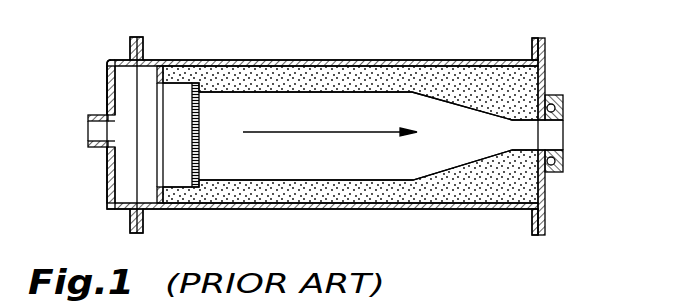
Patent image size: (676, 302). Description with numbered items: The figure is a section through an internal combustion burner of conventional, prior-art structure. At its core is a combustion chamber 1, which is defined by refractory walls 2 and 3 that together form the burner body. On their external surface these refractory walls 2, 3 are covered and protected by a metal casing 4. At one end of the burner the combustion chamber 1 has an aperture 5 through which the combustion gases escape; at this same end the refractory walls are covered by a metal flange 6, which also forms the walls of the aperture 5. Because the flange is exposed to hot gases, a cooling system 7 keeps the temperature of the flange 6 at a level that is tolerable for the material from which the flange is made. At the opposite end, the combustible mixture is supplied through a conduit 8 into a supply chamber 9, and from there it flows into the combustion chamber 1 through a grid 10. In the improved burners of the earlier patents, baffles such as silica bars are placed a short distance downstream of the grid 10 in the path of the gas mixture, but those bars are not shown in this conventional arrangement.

The combustion chamber 1 is at (335, 166).
The refractory wall 2 is at (302, 78).
The refractory wall 3 is at (461, 175).
The metal casing 4 is at (372, 63).
The aperture 5 is at (553, 136).
The metal flange 6 is at (546, 70).
The cooling system 7 is at (560, 106).
The conduit 8 is at (100, 149).
The supply chamber 9 is at (148, 69).
The grid 10 is at (200, 112).